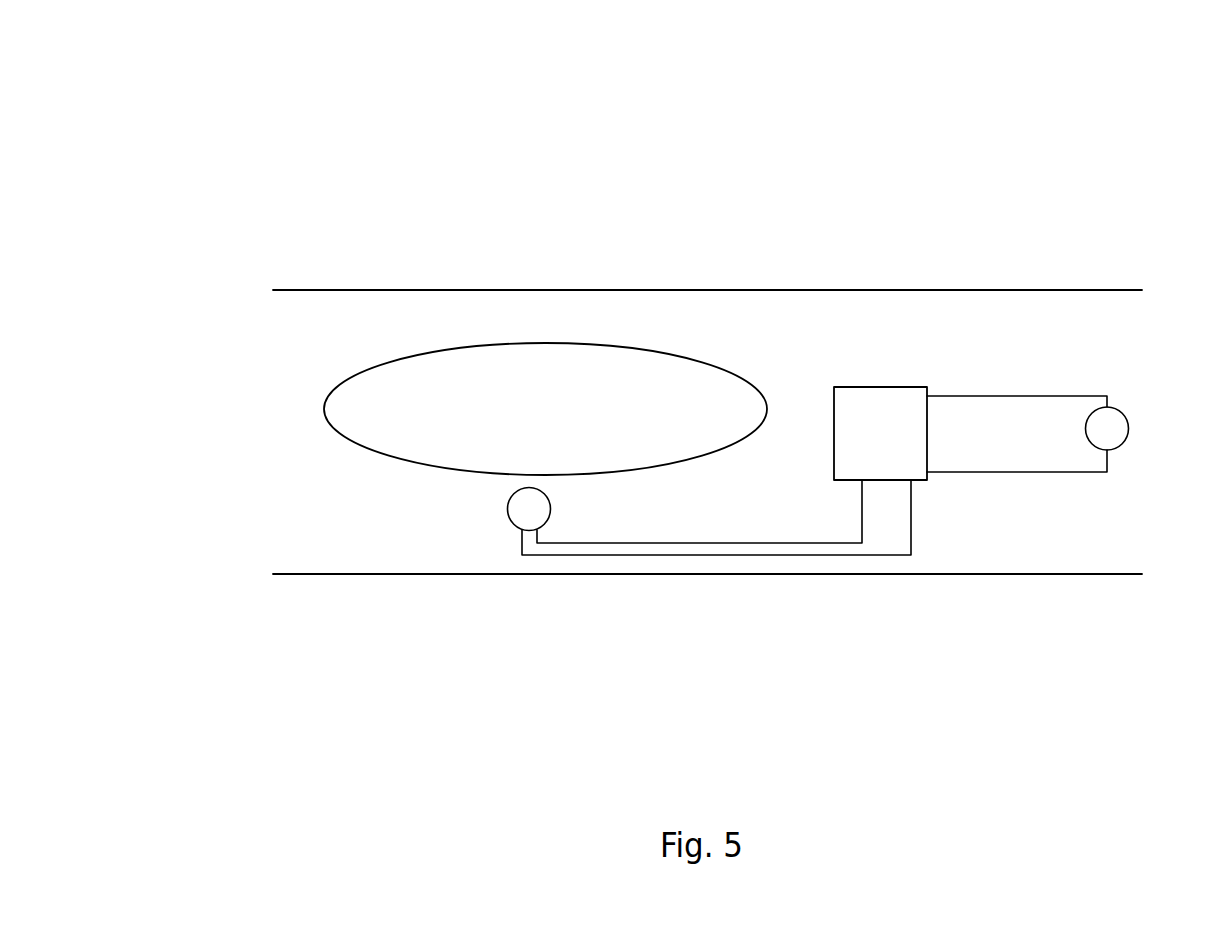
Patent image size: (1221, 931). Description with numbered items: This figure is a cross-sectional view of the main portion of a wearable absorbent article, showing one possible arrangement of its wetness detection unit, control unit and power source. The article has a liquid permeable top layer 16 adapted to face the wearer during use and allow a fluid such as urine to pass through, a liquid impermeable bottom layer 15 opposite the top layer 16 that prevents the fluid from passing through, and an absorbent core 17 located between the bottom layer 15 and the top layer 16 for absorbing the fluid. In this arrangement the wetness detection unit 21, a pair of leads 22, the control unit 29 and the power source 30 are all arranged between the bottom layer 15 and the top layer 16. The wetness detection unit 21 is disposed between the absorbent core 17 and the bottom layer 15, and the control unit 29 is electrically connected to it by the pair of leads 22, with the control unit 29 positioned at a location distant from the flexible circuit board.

The liquid impermeable bottom layer 15 is at (343, 575).
The liquid permeable top layer 16 is at (423, 290).
The absorbent core 17 is at (588, 347).
The wetness detection unit 21 is at (517, 525).
The leads 22 is at (653, 555).
The control unit 29 is at (818, 432).
The power source 30 is at (1128, 413).